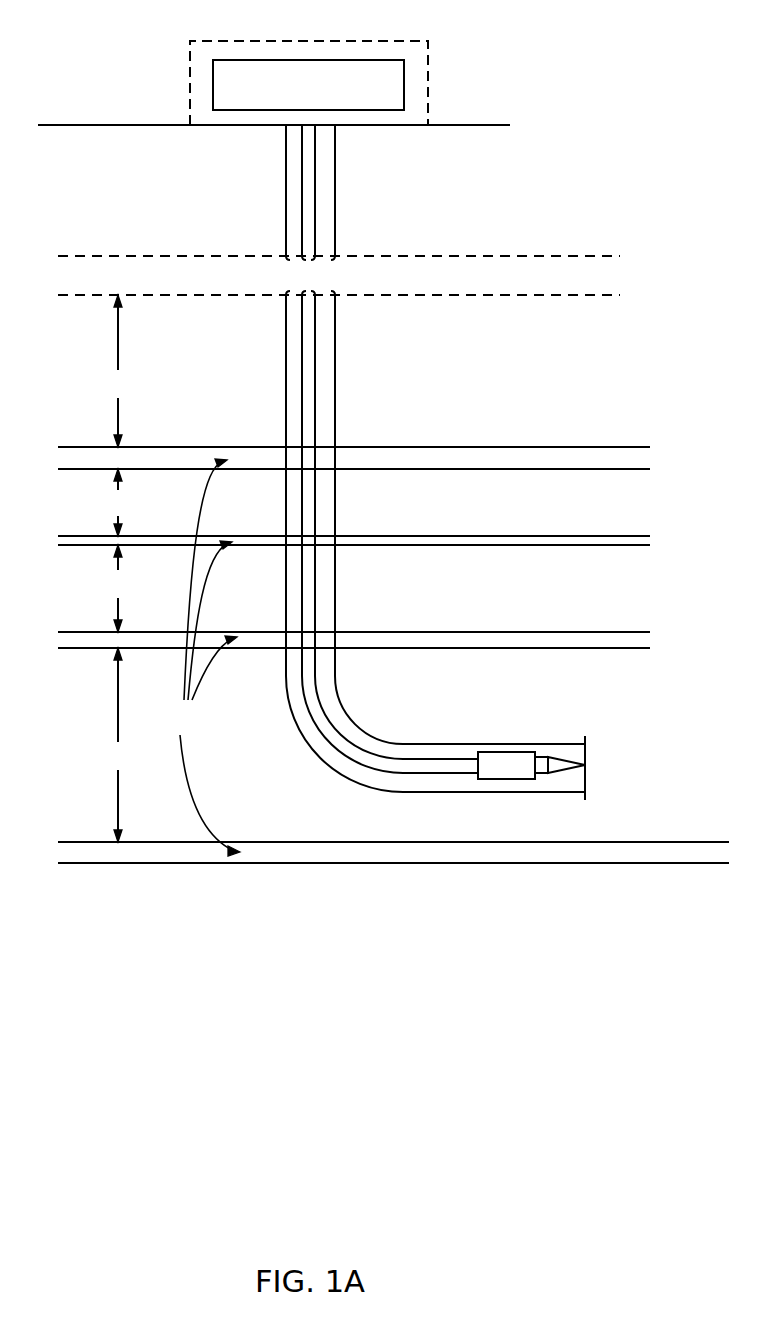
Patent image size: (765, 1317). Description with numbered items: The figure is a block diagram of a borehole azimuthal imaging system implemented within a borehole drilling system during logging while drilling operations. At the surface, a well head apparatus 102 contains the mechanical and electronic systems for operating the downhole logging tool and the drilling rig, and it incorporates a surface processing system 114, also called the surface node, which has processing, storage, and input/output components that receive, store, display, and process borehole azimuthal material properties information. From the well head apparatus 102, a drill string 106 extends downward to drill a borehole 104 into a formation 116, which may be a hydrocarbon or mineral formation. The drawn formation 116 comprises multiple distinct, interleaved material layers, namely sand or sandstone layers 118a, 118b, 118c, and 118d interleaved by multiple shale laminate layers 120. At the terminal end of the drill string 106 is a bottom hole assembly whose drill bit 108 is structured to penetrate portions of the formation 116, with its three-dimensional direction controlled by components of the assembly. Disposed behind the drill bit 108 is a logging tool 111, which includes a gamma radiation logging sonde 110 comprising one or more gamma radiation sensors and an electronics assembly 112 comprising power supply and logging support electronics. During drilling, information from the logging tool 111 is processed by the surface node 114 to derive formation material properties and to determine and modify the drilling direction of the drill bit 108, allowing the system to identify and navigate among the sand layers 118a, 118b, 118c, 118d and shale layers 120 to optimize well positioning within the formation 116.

The well head apparatus 102 is at (260, 41).
The surface processing system 114 is at (335, 60).
The borehole 104 is at (335, 322).
The drill string 106 is at (315, 378).
The formation 116 is at (522, 388).
The sand layer 118a is at (120, 371).
The sand layer 118b is at (120, 502).
The sand layer 118c is at (119, 588).
The sand layer 118d is at (120, 745).
The shale laminate layers 120 is at (206, 657).
The electronics assembly 112 is at (508, 752).
The drill bit 108 is at (557, 760).
The gamma radiation logging sonde 110 is at (545, 756).
The logging tool 111 is at (532, 780).